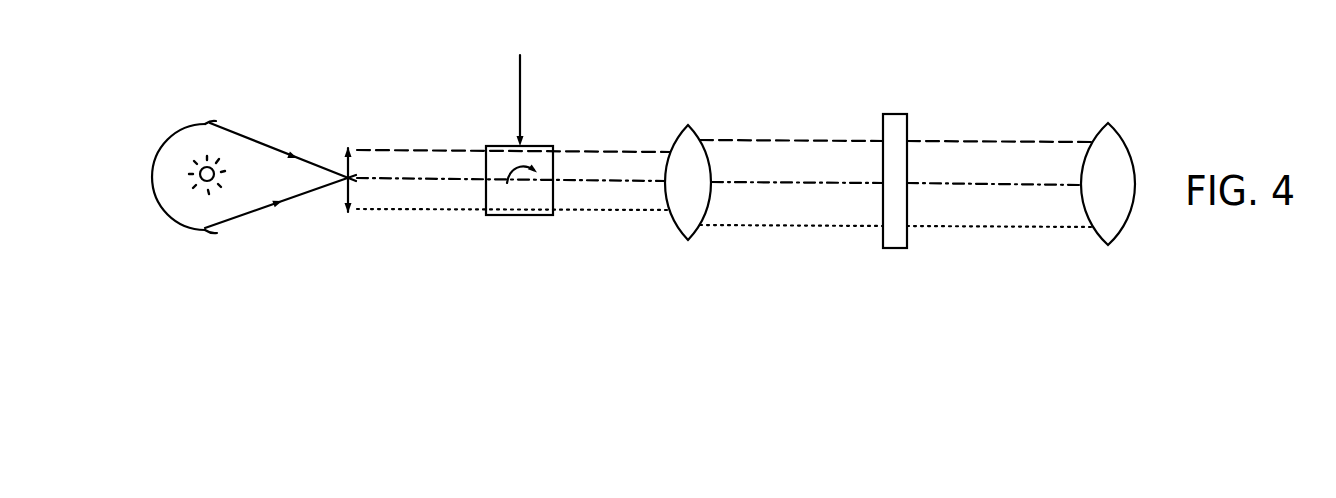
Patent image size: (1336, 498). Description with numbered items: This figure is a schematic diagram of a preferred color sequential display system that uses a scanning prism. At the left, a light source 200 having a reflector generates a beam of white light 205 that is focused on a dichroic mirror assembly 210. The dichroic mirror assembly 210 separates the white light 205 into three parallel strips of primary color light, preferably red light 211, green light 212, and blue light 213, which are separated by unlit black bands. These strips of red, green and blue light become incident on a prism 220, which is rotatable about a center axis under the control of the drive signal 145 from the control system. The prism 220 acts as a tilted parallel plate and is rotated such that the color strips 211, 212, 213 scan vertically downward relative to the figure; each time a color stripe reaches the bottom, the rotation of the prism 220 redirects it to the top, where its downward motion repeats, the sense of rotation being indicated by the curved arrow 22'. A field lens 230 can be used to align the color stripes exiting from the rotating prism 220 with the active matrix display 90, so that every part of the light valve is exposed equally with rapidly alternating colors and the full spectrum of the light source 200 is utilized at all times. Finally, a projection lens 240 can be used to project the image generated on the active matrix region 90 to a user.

The light source 200 is at (174, 136).
The white light 205 is at (253, 142).
The dichroic mirror assembly 210 is at (348, 224).
The red light 211 is at (388, 150).
The green light 212 is at (400, 182).
The blue light 213 is at (435, 212).
The drive signal 145 is at (523, 82).
The prism 220 is at (508, 215).
The rotation direction 22' is at (548, 210).
The field lens 230 is at (688, 240).
The active matrix display 90 is at (893, 250).
The projection lens 240 is at (1108, 245).